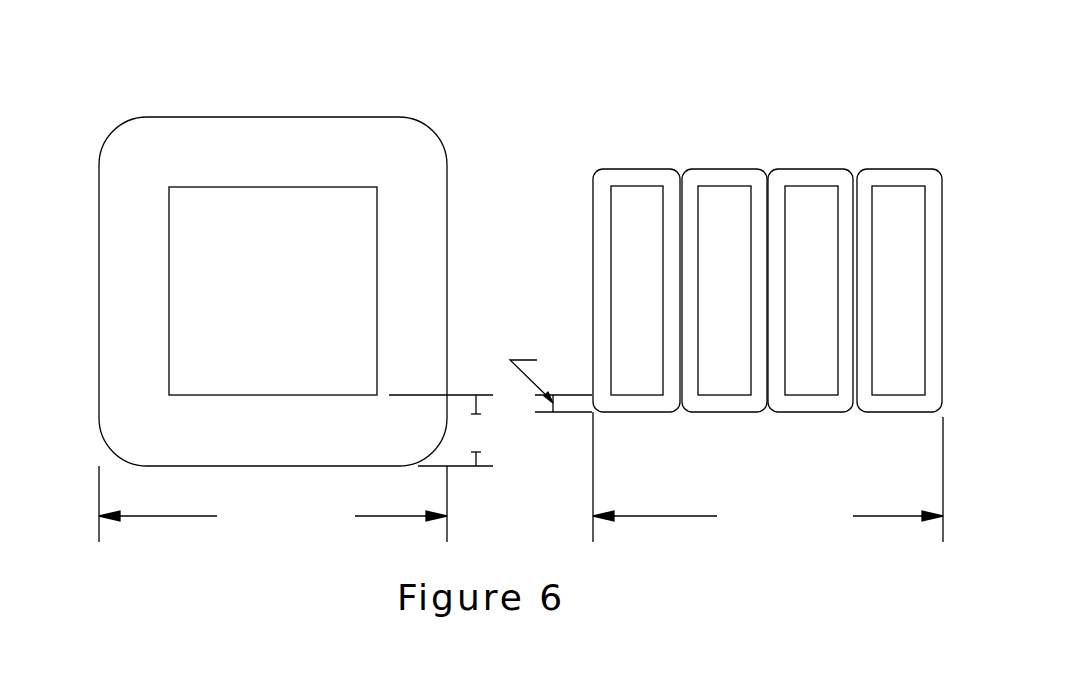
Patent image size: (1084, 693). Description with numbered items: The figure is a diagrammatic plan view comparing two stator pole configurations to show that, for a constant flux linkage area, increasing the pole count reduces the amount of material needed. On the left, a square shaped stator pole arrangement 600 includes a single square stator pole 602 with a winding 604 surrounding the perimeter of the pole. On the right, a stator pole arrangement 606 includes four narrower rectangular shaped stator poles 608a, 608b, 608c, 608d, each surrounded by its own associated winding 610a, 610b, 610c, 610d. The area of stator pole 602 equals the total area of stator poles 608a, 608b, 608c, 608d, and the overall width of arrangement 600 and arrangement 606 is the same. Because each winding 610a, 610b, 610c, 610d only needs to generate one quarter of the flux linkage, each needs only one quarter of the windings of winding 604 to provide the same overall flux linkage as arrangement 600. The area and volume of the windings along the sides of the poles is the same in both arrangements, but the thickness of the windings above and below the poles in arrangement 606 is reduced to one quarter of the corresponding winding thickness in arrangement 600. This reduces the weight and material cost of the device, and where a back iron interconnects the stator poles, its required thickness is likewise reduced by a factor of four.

The square shaped stator pole arrangement 600 is at (338, 289).
The stator pole 602 is at (302, 232).
The winding 604 is at (319, 286).
The stator pole arrangement 606 is at (731, 280).
The rectangular shaped stator pole 608a is at (697, 233).
The rectangular shaped stator pole 608b is at (772, 241).
The rectangular shaped stator pole 608c is at (842, 253).
The rectangular shaped stator pole 608d is at (904, 264).
The winding 610a is at (655, 332).
The winding 610b is at (727, 321).
The winding 610c is at (801, 313).
The winding 610d is at (890, 332).